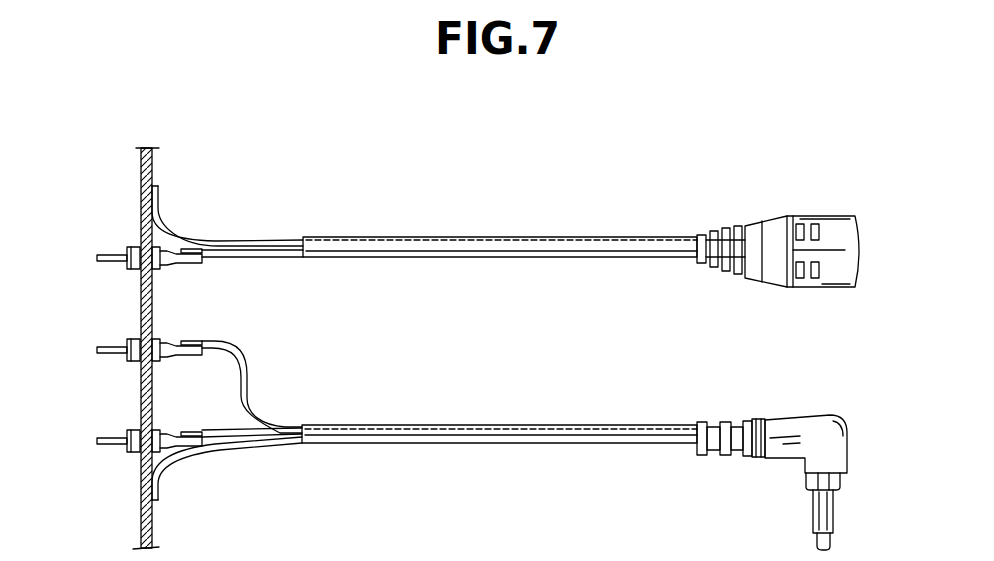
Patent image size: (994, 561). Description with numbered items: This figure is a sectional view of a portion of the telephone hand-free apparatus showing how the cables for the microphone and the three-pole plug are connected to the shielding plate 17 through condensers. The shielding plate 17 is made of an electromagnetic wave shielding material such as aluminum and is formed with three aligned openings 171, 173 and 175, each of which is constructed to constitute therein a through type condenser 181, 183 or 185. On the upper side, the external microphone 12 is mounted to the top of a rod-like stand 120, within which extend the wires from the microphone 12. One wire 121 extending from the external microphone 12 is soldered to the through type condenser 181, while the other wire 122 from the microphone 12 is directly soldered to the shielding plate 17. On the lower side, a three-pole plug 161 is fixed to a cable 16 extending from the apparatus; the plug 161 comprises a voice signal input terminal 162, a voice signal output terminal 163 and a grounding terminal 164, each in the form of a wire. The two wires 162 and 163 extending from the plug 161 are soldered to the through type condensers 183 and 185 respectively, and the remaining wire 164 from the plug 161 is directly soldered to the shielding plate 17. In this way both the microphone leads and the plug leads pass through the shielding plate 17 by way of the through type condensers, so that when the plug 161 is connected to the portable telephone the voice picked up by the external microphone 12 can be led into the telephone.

The external microphone 12 is at (840, 233).
The cable 16 is at (605, 445).
The shielding plate 17 is at (152, 173).
The stand 120 is at (520, 238).
The wire 121 is at (237, 258).
The wire 122 is at (217, 238).
The 3P-plug 161 is at (817, 440).
The voice signal input terminal 162 is at (245, 364).
The voice signal output terminal 163 is at (222, 432).
The grounding terminal 164 is at (205, 451).
The opening 171 is at (160, 250).
The opening 173 is at (160, 340).
The opening 175 is at (158, 446).
The through type condenser 181 is at (157, 222).
The through type condenser 183 is at (160, 323).
The through type condenser 185 is at (147, 454).